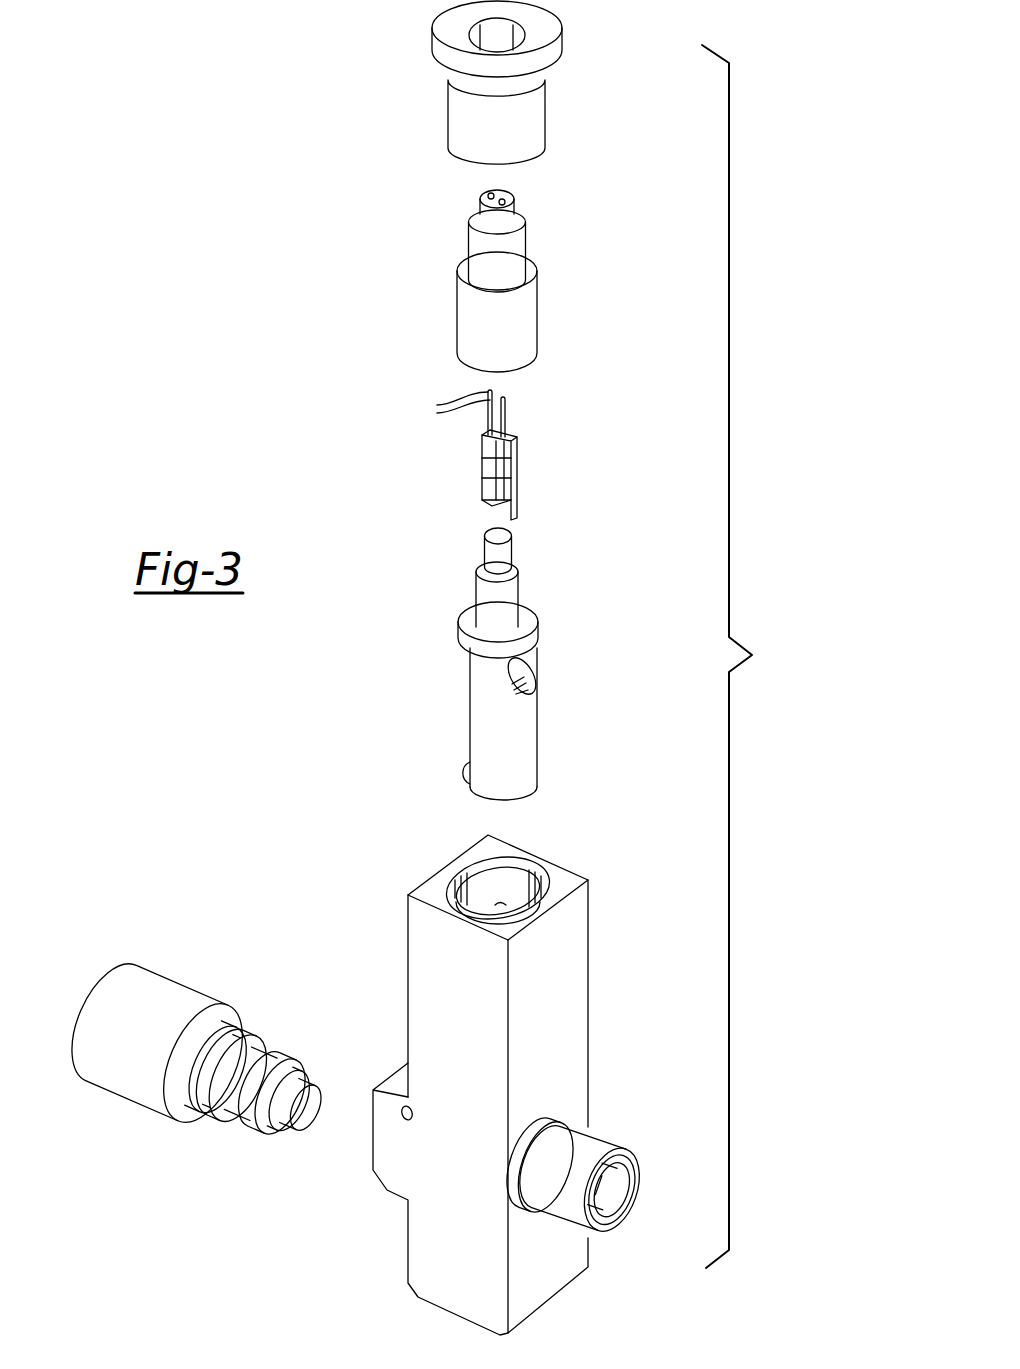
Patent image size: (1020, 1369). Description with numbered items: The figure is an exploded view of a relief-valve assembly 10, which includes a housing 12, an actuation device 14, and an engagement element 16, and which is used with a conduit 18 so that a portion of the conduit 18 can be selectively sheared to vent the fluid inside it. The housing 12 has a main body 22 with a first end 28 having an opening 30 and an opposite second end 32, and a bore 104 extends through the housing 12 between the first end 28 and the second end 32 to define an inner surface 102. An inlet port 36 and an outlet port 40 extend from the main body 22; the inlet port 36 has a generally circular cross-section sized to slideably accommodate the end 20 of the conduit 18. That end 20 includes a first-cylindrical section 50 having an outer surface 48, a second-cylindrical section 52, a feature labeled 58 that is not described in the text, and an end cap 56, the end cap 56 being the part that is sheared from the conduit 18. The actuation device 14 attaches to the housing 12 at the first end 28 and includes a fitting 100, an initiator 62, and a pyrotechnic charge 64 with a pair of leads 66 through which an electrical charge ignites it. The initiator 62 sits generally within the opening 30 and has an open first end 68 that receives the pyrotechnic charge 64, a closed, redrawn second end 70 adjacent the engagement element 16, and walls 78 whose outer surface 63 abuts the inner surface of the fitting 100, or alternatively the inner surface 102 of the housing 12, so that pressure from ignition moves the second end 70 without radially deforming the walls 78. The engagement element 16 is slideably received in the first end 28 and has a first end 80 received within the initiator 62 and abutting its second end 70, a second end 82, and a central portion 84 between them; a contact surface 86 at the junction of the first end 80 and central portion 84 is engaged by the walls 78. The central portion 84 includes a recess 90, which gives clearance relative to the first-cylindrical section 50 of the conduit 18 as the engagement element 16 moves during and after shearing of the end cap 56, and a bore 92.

The relief-valve assembly 10 is at (741, 656).
The housing 12 is at (494, 1068).
The actuation device 14 is at (424, 384).
The engagement element 16 is at (509, 661).
The conduit 18 is at (198, 1059).
The end of the conduit 20 is at (256, 1086).
The main body 22 is at (572, 1052).
The first end 28 is at (574, 881).
The opening 30 is at (515, 890).
The second end 32 is at (551, 1300).
The inlet port 36 is at (392, 1098).
The outlet port 40 is at (600, 1146).
The outer surface 48 is at (289, 1100).
The first-cylindrical section 50 is at (271, 1092).
The second-cylindrical section 52 is at (157, 1043).
The end cap 56 is at (304, 1106).
The seal ring 58 is at (227, 1074).
The initiator 62 is at (507, 466).
The outer surface of the initiator 63 is at (512, 478).
The pyrotechnic charge 64 is at (496, 466).
The leads 66 is at (450, 410).
The first end of the initiator 68 is at (512, 436).
The second end of the initiator 70 is at (484, 509).
The walls of the initiator 78 is at (487, 472).
The first end of the engagement element 80 is at (506, 553).
The second end of the engagement element 82 is at (532, 793).
The central portion 84 is at (530, 724).
The contact surface 86 is at (490, 569).
The recess 90 is at (470, 712).
The bore 92 is at (528, 672).
The fitting 100 is at (546, 290).
The inner surface of the housing 102 is at (498, 906).
The bore of the housing 104 is at (481, 892).